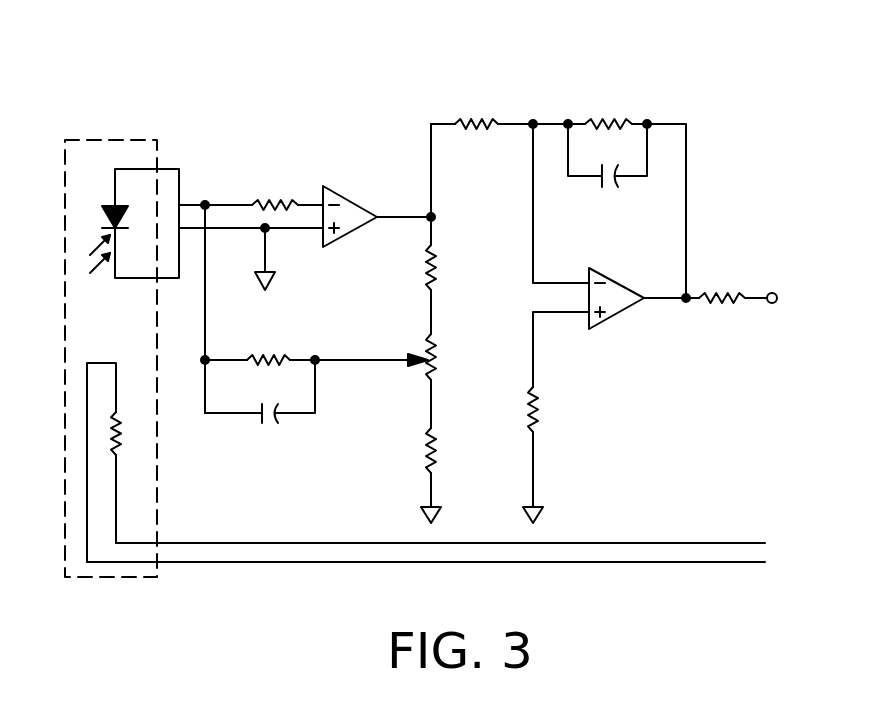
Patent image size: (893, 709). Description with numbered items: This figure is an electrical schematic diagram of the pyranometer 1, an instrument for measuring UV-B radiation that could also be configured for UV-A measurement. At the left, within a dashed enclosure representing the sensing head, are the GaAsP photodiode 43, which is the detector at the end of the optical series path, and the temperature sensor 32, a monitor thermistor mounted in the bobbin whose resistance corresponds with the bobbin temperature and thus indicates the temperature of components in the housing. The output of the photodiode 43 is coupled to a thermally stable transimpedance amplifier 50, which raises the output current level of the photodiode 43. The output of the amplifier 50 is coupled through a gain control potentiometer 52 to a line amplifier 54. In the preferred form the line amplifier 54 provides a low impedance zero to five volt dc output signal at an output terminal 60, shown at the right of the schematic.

The pyranometer 1 is at (687, 53).
The temperature sensor 32 is at (92, 440).
The GaAsP photodiode 43 is at (140, 197).
The transimpedance amplifier 50 is at (352, 205).
The gain control potentiometer 52 is at (437, 345).
The line amplifier 54 is at (622, 291).
The output terminal 60 is at (773, 292).